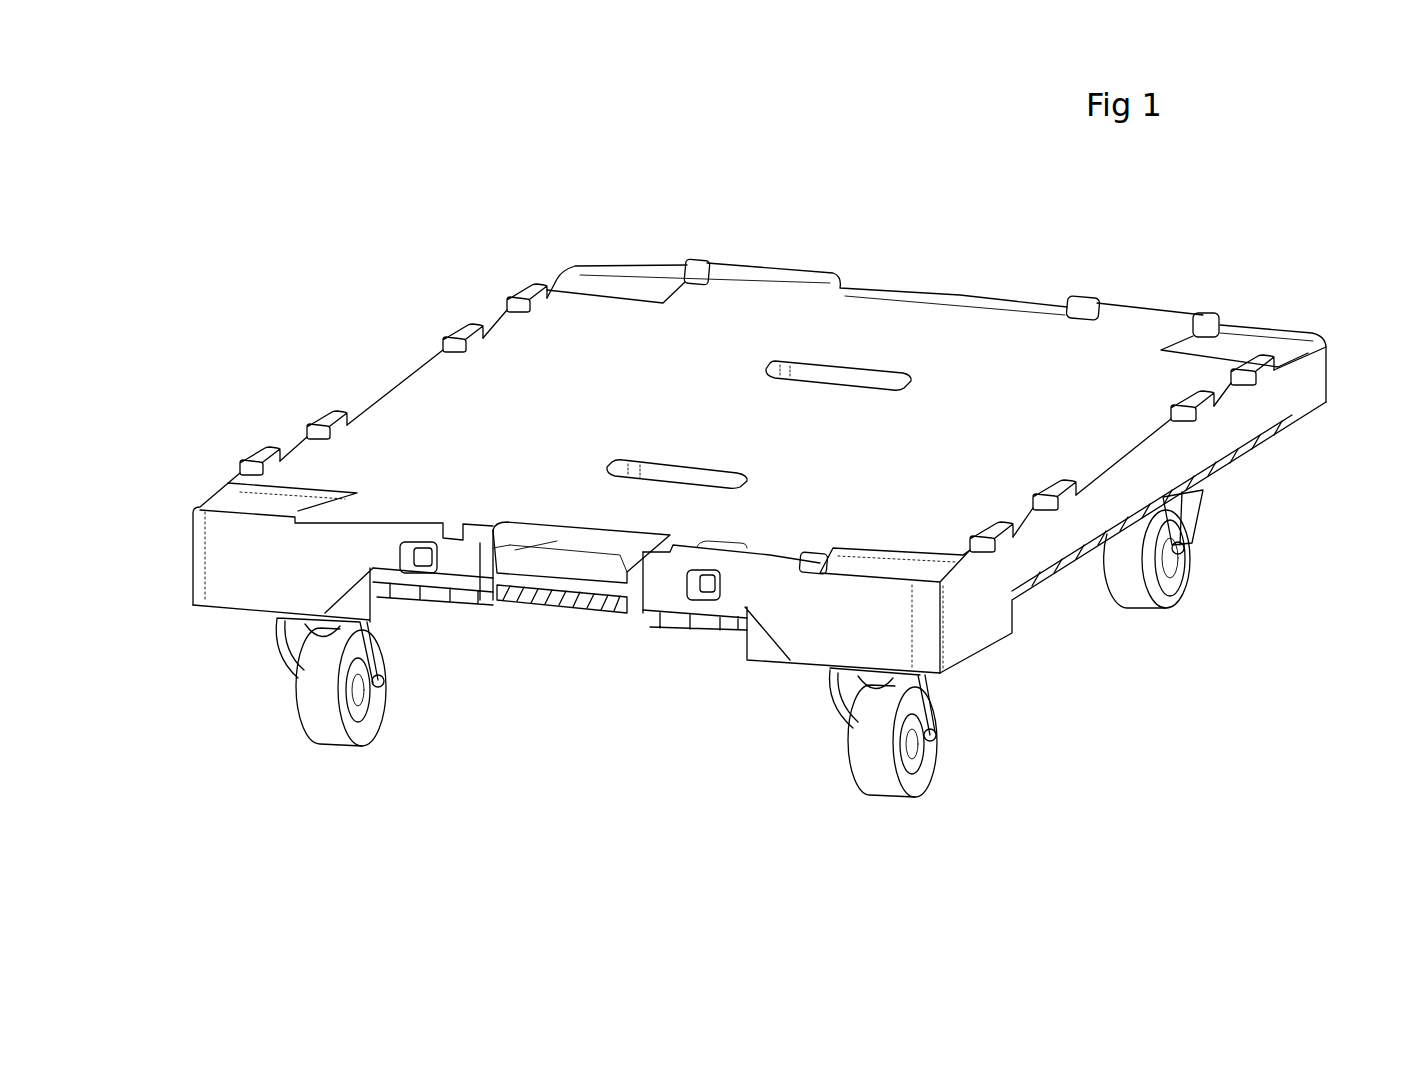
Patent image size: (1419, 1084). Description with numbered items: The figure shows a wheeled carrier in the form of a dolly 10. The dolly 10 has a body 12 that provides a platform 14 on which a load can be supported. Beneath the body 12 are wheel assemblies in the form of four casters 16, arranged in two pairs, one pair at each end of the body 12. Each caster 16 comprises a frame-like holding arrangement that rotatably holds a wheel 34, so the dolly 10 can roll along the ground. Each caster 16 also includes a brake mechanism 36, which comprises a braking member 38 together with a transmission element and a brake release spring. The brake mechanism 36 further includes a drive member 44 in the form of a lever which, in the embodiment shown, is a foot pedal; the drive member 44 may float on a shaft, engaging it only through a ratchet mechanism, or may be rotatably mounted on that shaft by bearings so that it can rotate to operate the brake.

The dolly 10 is at (388, 303).
The body 12 is at (920, 327).
The platform 14 is at (718, 310).
The caster 16 is at (312, 683).
The wheel 34 is at (333, 720).
The brake mechanism 36 is at (336, 634).
The braking member 38 is at (317, 632).
The drive member 44 is at (593, 606).